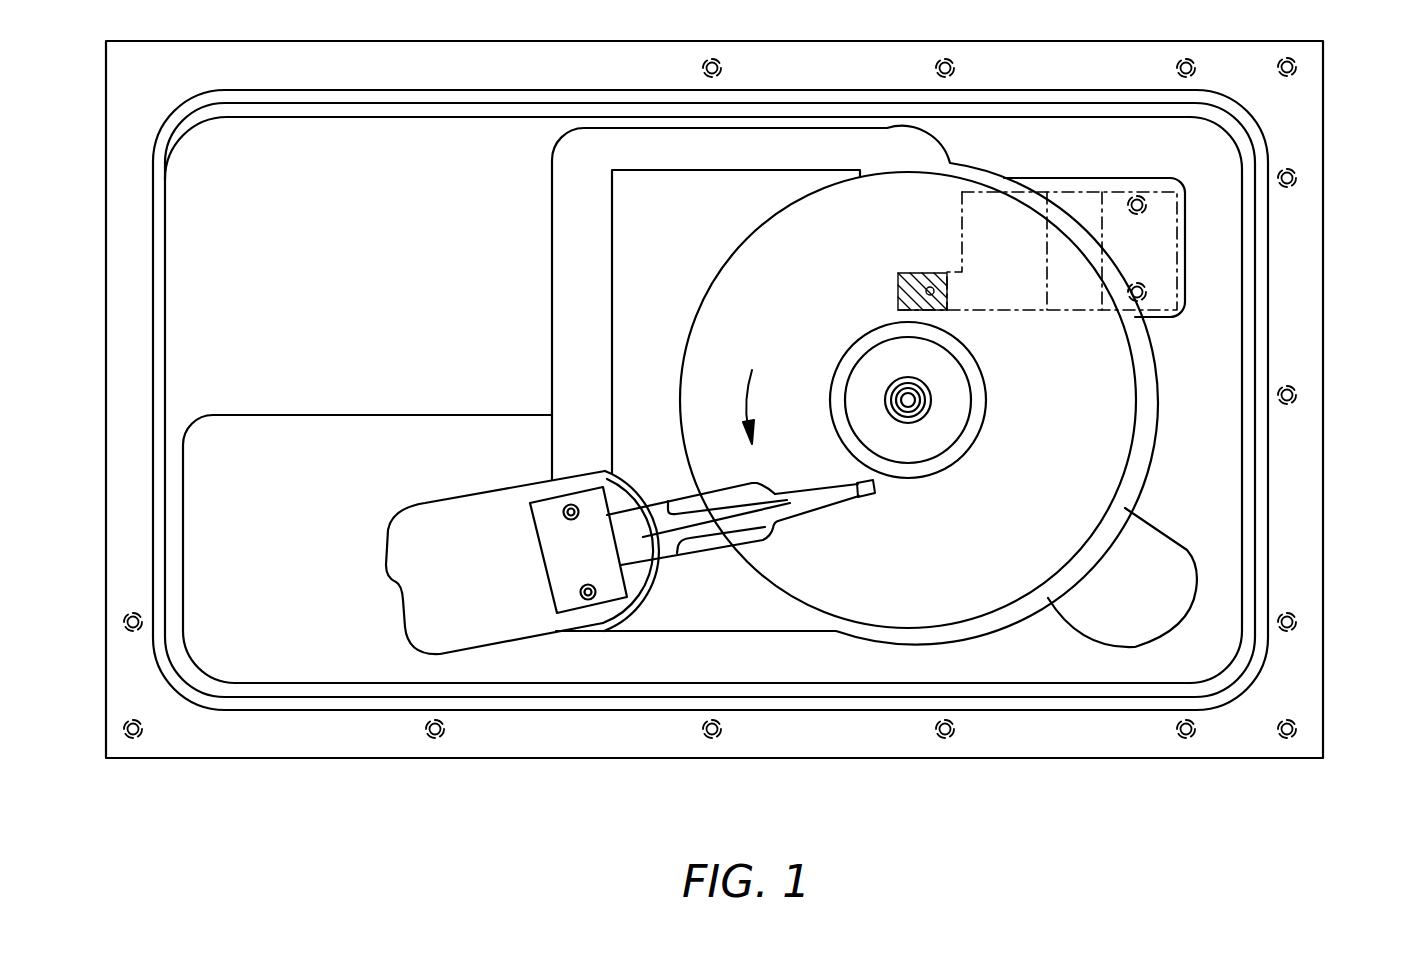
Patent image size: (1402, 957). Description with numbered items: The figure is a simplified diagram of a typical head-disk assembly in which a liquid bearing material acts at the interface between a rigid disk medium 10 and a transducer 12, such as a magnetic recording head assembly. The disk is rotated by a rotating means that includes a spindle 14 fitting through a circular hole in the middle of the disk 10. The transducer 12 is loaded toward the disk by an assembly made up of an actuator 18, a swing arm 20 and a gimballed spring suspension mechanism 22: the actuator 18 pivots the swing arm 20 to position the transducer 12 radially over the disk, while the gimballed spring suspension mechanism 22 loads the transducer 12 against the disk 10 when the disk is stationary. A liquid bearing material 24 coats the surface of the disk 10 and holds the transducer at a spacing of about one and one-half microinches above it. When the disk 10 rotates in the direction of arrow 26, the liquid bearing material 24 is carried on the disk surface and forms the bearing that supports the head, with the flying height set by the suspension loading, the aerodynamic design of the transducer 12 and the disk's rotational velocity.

The rigid disk medium 10 is at (1135, 385).
The transducer 12 is at (876, 495).
The spindle 14 is at (938, 399).
The actuator 18 is at (465, 595).
The swing arm 20 is at (750, 517).
The gimballed spring suspension mechanism 22 is at (810, 500).
The liquid bearing material 24 is at (995, 593).
The arrow 26 is at (766, 399).